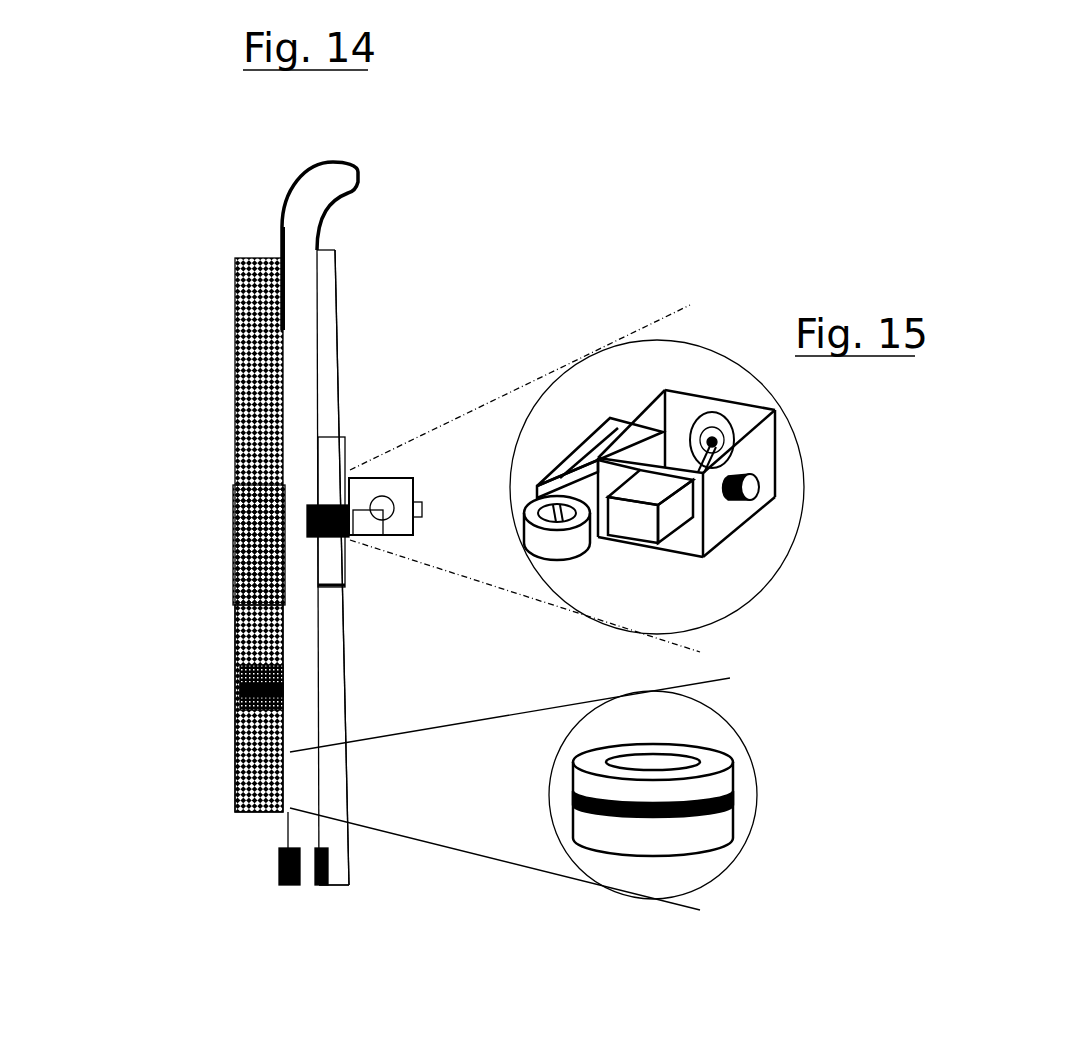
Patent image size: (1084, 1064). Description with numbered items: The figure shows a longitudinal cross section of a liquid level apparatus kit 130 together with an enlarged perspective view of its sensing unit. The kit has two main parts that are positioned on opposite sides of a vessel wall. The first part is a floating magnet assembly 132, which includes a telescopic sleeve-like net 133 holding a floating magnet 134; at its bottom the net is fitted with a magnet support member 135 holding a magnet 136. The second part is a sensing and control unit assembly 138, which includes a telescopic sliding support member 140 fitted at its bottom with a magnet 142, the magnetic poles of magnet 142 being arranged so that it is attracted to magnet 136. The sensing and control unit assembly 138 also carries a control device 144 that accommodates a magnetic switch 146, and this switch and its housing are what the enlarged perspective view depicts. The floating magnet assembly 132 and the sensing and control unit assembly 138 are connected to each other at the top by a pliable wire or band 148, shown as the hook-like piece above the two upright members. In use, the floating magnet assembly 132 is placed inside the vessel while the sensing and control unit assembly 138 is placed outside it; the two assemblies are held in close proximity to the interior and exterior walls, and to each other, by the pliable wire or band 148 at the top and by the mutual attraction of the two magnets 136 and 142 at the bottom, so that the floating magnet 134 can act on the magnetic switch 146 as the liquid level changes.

In FIG. 14, the liquid level apparatus kit 130 is at (383, 410).
In FIG. 14, the floating magnet assembly 132 is at (215, 463).
In FIG. 14, the telescopic sleeve-like net 133 is at (232, 650).
In FIG. 14, the floating magnet 134 is at (240, 688).
In FIG. 14, the magnet support member 135 is at (282, 830).
In FIG. 14, the magnet 136 is at (275, 882).
In FIG. 14, the sensing and control unit assembly 138 is at (387, 612).
In FIG. 15, the sensing and control unit assembly 138 is at (750, 560).
In FIG. 14, the telescopic sliding support member 140 is at (355, 792).
In FIG. 14, the magnet 142 is at (320, 890).
In FIG. 15, the control device 144 is at (633, 522).
In FIG. 15, the magnetic switch 146 is at (622, 408).
In FIG. 14, the pliable wire or band 148 is at (372, 158).